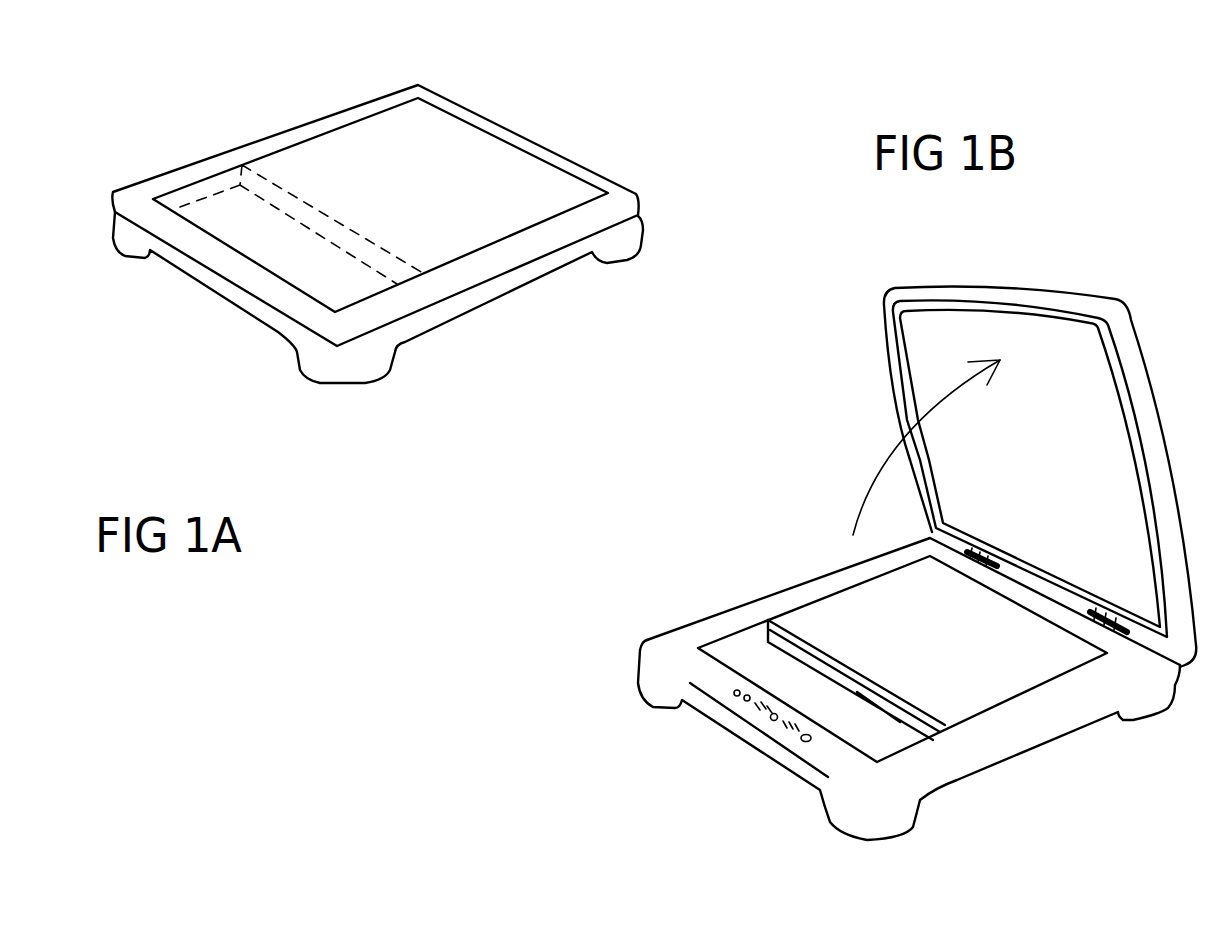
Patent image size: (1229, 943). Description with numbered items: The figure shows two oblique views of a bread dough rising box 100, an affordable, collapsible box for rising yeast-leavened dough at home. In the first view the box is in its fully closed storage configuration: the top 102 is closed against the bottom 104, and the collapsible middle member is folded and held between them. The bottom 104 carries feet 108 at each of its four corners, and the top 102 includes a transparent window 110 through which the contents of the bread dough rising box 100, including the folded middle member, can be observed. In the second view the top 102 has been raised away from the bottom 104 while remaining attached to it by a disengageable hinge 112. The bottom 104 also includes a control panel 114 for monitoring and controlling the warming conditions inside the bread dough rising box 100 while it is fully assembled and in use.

In FIG. 1A, the bread dough rising box 100 is at (607, 102).
In FIG. 1B, the bread dough rising box 100 is at (785, 447).
In FIG. 1A, the top 102 is at (212, 155).
In FIG. 1B, the top 102 is at (1060, 290).
In FIG. 1A, the bottom 104 is at (482, 305).
In FIG. 1B, the bottom 104 is at (1007, 757).
In FIG. 1A, the feet 108 is at (113, 248).
In FIG. 1B, the feet 108 is at (910, 833).
In FIG. 1A, the transparent window 110 is at (468, 158).
In FIG. 1B, the disengageable hinge 112 is at (1100, 610).
In FIG. 1B, the control panel 114 is at (763, 725).